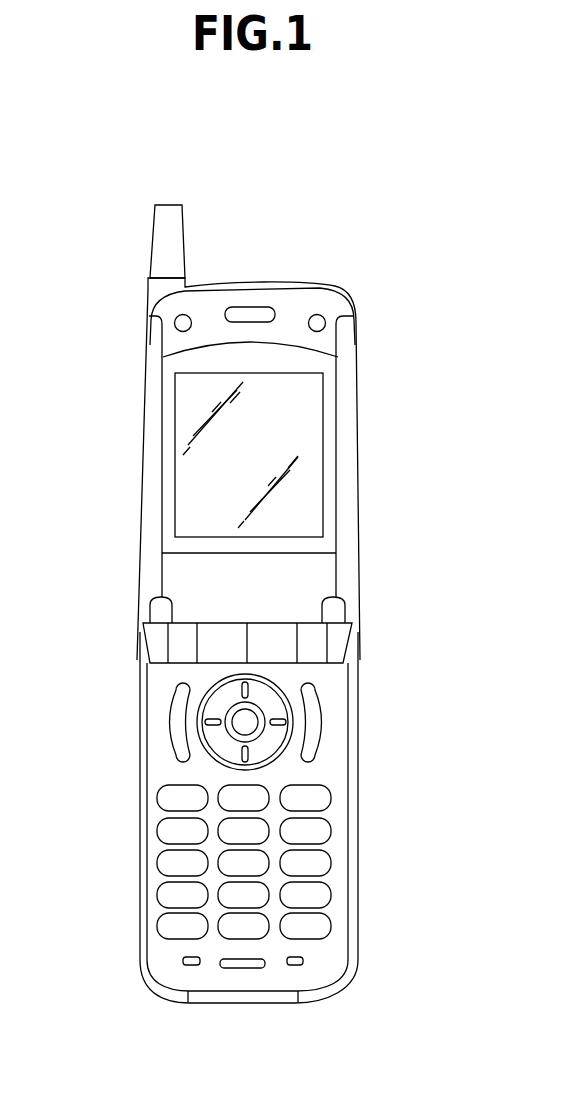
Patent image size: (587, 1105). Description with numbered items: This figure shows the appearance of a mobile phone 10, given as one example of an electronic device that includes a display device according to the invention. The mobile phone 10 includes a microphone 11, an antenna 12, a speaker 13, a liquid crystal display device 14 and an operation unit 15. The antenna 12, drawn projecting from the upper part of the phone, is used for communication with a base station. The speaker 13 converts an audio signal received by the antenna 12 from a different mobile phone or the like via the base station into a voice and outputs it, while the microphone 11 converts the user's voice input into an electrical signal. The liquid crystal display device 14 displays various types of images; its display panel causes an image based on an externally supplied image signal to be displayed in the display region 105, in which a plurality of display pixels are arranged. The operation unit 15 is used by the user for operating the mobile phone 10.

The mobile phone 10 is at (365, 203).
The microphone 11 is at (245, 968).
The antenna 12 is at (153, 243).
The speaker 13 is at (248, 307).
The liquid crystal display device 14 is at (193, 472).
The operation unit 15 is at (157, 832).
The display region 105 is at (302, 425).